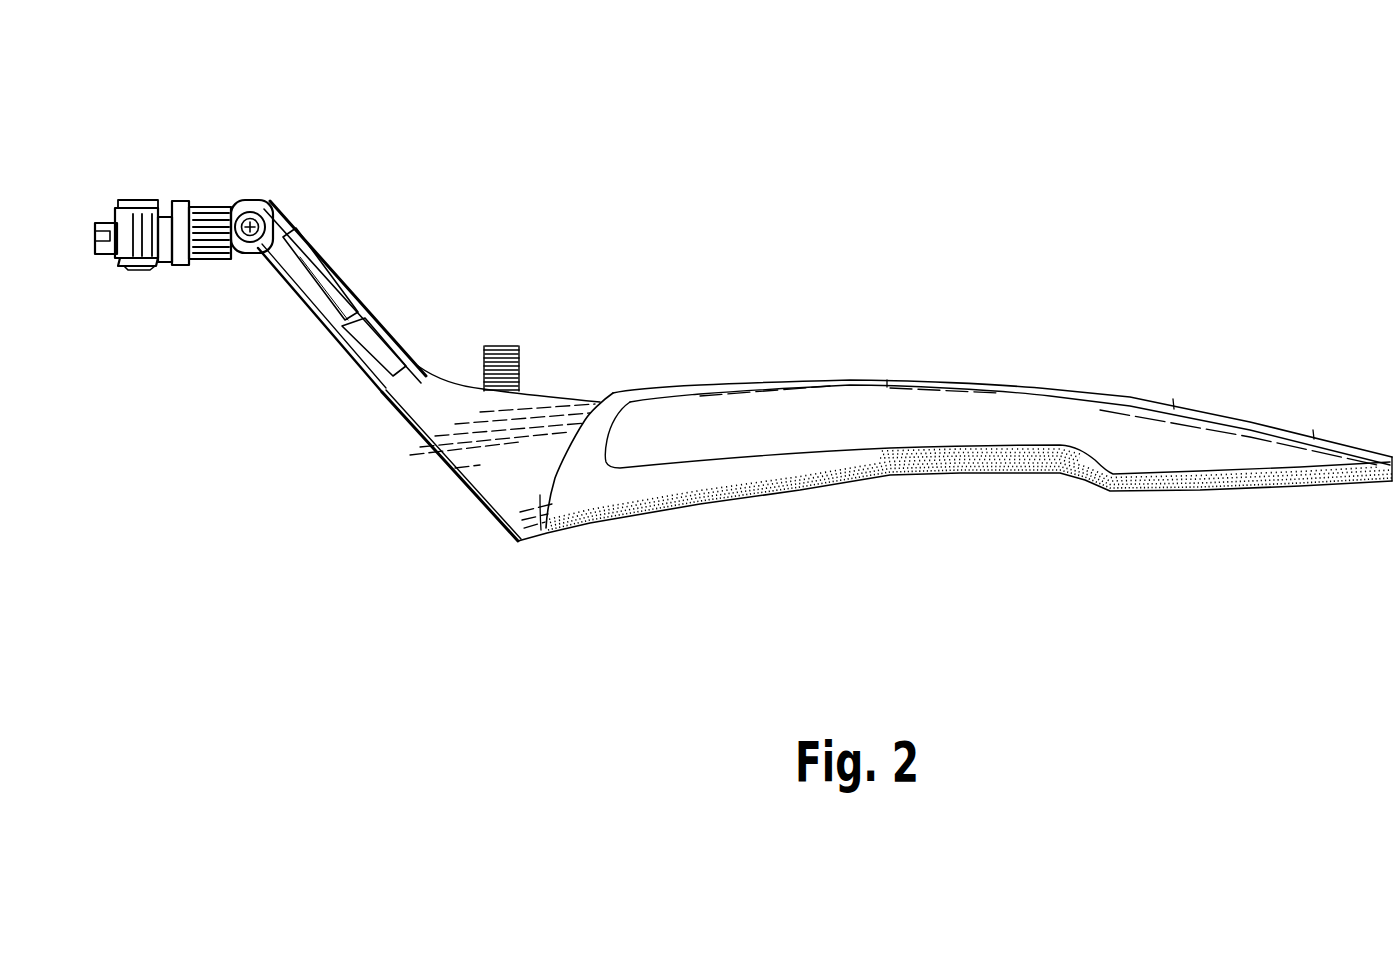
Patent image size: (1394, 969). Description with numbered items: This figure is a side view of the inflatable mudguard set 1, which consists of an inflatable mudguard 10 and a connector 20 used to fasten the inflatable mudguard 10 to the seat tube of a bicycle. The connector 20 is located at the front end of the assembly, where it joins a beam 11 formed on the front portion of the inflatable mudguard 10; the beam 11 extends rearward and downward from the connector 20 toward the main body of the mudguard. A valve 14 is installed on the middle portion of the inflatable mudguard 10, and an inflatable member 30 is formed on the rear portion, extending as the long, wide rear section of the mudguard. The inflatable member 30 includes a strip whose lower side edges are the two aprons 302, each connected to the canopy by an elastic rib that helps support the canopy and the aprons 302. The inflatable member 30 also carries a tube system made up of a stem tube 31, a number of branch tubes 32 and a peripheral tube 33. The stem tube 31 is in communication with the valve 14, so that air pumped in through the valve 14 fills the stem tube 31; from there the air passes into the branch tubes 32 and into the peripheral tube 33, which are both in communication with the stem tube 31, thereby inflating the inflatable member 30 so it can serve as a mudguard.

The inflatable mudguard set 1 is at (743, 289).
The inflatable mudguard 10 is at (887, 405).
The beam 11 is at (342, 296).
The valve 14 is at (501, 323).
The connector 20 is at (184, 280).
The inflatable member 30 is at (966, 427).
The stem tube 31 is at (997, 380).
The branch tubes 32 is at (1010, 378).
The peripheral tube 33 is at (970, 513).
The aprons 302 is at (1327, 508).